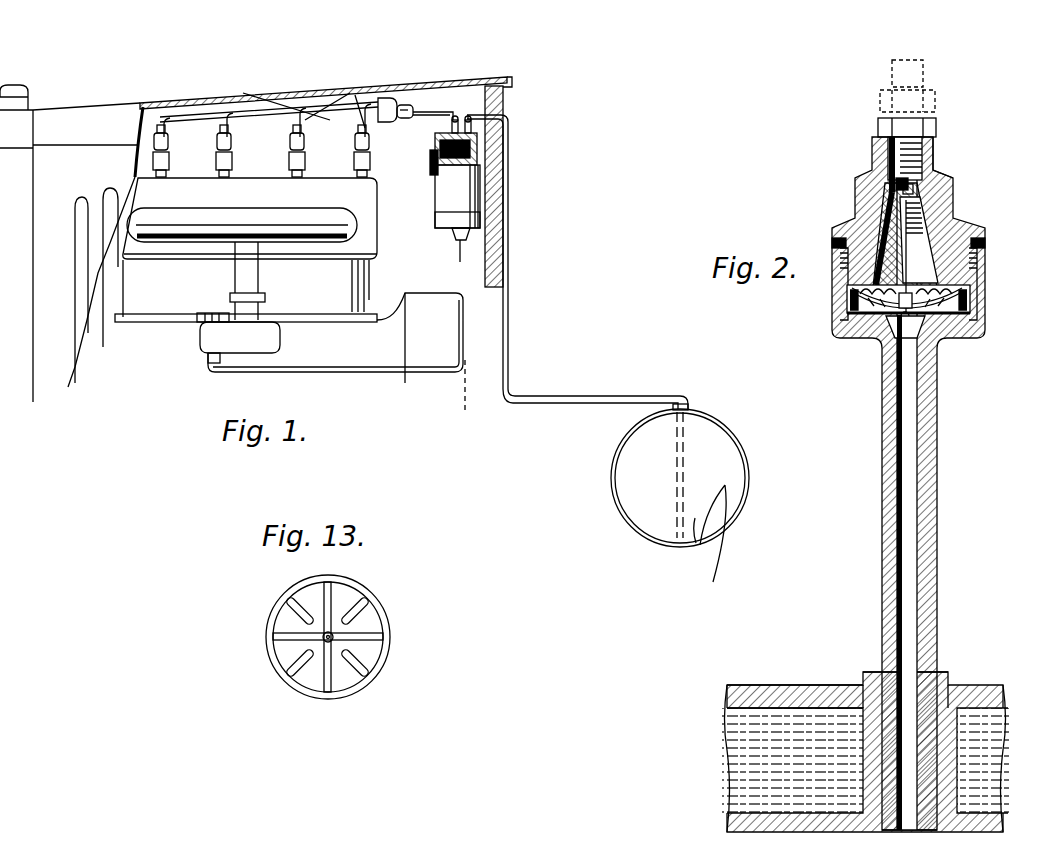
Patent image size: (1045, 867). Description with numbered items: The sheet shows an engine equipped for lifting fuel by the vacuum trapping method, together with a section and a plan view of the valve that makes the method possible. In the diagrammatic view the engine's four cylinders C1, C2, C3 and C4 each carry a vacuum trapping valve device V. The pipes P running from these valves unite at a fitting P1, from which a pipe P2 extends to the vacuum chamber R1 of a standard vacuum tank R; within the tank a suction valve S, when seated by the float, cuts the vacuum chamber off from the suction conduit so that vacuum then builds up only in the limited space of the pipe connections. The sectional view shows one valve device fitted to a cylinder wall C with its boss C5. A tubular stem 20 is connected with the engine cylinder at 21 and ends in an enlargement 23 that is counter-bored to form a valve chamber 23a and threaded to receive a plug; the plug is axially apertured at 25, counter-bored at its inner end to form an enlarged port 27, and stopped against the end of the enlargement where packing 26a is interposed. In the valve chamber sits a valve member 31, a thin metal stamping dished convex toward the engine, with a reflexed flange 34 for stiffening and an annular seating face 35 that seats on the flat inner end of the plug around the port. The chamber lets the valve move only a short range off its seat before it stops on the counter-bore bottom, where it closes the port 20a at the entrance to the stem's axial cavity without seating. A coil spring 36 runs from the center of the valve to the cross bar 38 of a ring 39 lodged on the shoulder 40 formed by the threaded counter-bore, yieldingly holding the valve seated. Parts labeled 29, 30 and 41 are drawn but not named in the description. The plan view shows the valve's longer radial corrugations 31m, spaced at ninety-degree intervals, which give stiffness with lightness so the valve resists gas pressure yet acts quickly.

In FIG. 1, the vacuum trapping valve device V is at (290, 116).
In FIG. 1, the pipes P is at (340, 122).
In FIG. 1, the fitting P1 is at (395, 98).
In FIG. 1, the pipe P2 is at (410, 118).
In FIG. 1, the suction valve S is at (470, 152).
In FIG. 1, the vacuum chamber R1 is at (478, 158).
In FIG. 1, the vacuum tank R is at (481, 192).
In FIG. 1, the cylinder C1 is at (157, 177).
In FIG. 2, the cylinder C1 is at (728, 697).
In FIG. 1, the cylinder C2 is at (220, 177).
In FIG. 1, the cylinder C3 is at (293, 177).
In FIG. 1, the cylinder C4 is at (358, 177).
In FIG. 2, the crankcase C is at (728, 741).
In FIG. 2, the boss C5 is at (950, 681).
In FIG. 2, the tubular stem 20 is at (888, 656).
In FIG. 2, the port 20a is at (935, 330).
In FIG. 2, the cylinder connection 21 is at (905, 832).
In FIG. 2, the enlargement 23 is at (838, 299).
In FIG. 2, the valve chamber 23a is at (855, 313).
In FIG. 2, the axial aperture 25 is at (923, 230).
In FIG. 2, the packing 26a is at (836, 240).
In FIG. 2, the enlarged port 27 is at (935, 287).
In FIG. 2, the threads 29 is at (850, 261).
In FIG. 2, the body head 30 is at (933, 141).
In FIG. 2, the valve member 31 is at (870, 318).
In FIG. 13, the valve member 31 is at (378, 592).
In FIG. 13, the radial corrugations 31m is at (300, 657).
In FIG. 2, the reflexed flange 34 is at (962, 306).
In FIG. 13, the reflexed flange 34 is at (384, 628).
In FIG. 2, the annular seating face 35 is at (965, 297).
In FIG. 2, the coil spring 36 is at (927, 190).
In FIG. 2, the cross bar 38 is at (903, 176).
In FIG. 2, the ring 39 is at (937, 173).
In FIG. 2, the shoulder 40 is at (908, 195).
In FIG. 2, the rod 41 is at (892, 163).